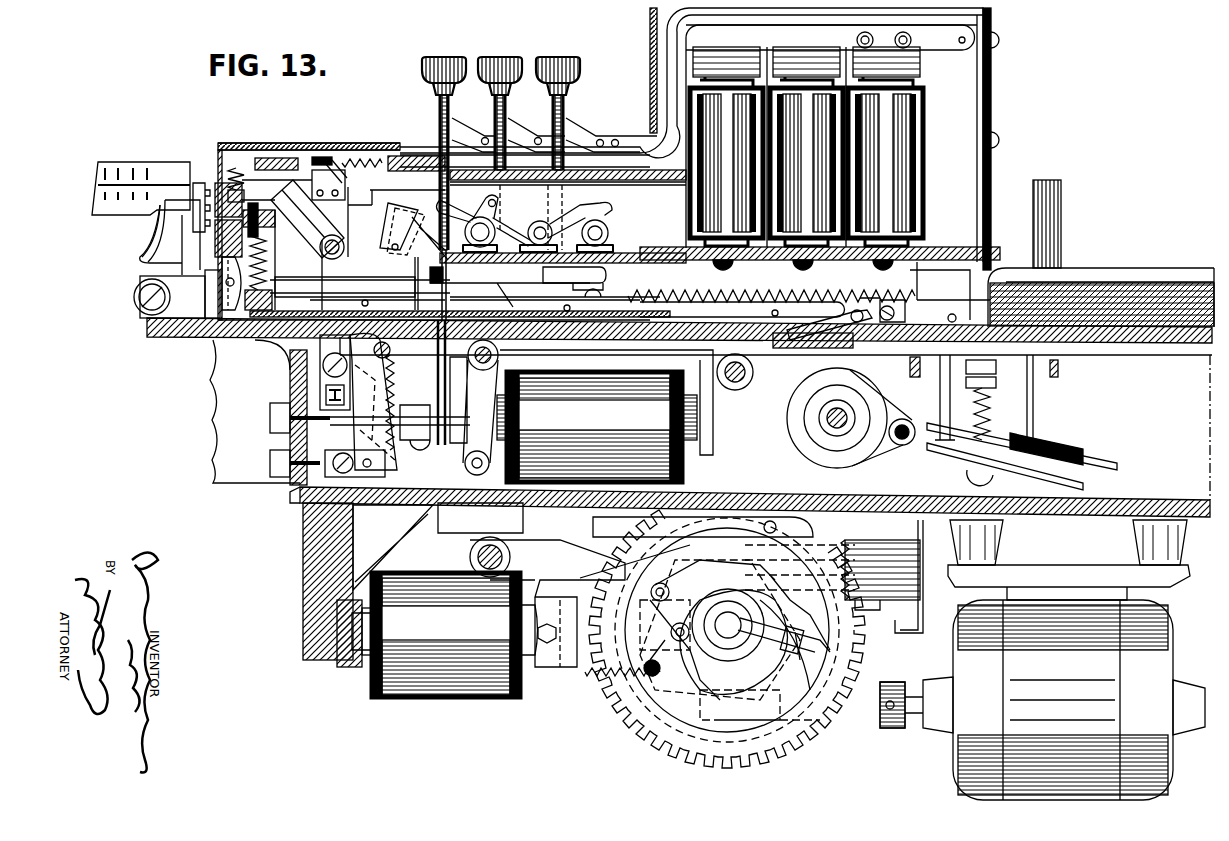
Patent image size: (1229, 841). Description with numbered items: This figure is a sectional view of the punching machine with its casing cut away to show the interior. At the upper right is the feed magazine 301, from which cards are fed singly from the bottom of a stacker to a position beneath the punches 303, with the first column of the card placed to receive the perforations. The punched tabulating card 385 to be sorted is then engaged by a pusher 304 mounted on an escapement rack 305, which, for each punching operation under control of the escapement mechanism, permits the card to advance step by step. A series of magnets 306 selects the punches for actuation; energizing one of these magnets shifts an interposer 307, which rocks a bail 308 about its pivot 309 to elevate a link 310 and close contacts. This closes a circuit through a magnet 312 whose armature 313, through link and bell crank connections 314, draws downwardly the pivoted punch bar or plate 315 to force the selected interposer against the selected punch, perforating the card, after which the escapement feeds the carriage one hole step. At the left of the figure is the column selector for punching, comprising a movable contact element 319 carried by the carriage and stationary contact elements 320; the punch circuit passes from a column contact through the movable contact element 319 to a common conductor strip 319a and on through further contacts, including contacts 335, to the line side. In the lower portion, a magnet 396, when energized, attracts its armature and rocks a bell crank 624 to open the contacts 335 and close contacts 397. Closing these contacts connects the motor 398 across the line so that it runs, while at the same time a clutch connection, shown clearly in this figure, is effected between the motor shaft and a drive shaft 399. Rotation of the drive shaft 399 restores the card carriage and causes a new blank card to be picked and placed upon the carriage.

The feed magazine 301 is at (1105, 303).
The punches 303 is at (268, 255).
The pusher 304 is at (817, 325).
The escapement rack 305 is at (745, 295).
The magnets 306 is at (880, 162).
The interposer 307 is at (363, 183).
The bail 308 is at (395, 219).
The pivot 309 is at (393, 251).
The link 310 is at (444, 276).
The magnet 312 is at (603, 400).
The armature 313 is at (515, 421).
The link and bell crank connections 314 is at (330, 338).
The punch bar 315 is at (275, 158).
The movable contact element 319 is at (192, 205).
The common conductor strip 319a is at (112, 218).
The stationary contact elements 320 is at (136, 188).
The contacts 335 is at (762, 517).
The punched tabulating card 385 is at (498, 290).
The magnet 396 is at (430, 647).
The contacts 397 is at (853, 626).
The motor 398 is at (1012, 712).
The drive shaft 399 is at (738, 624).
The bell crank 624 is at (547, 590).